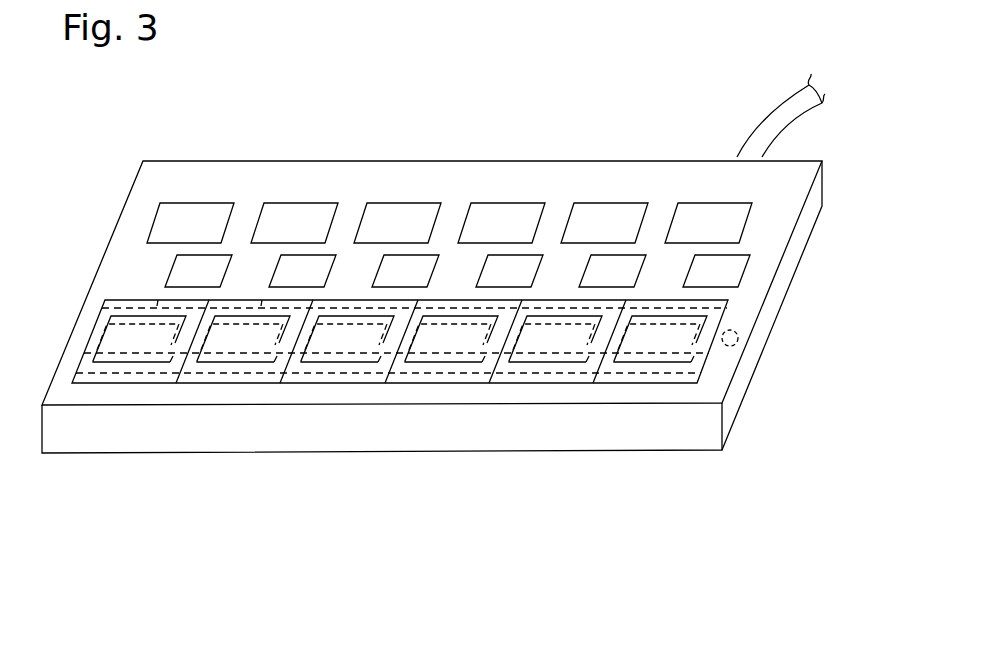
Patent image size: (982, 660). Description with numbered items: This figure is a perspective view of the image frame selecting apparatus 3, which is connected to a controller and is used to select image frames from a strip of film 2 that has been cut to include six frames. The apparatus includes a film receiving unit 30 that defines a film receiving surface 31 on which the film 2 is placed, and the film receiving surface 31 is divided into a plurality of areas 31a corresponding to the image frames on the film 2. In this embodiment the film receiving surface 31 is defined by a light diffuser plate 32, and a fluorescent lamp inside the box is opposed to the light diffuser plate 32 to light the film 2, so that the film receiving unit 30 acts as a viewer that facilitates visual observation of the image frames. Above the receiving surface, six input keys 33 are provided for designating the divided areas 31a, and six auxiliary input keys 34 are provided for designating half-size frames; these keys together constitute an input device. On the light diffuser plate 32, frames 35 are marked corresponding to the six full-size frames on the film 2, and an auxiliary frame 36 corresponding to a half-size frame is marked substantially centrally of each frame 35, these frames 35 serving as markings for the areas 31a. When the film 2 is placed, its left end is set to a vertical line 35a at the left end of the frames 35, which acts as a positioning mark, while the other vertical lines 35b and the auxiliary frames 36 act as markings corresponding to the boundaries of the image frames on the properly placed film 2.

The film 2 is at (452, 373).
The image frame selecting apparatus 3 is at (405, 459).
The film receiving unit 30 is at (812, 260).
The film receiving surface 31 is at (655, 342).
The areas 31a is at (110, 378).
The light diffuser plate 32 is at (622, 375).
The input keys 33 is at (395, 212).
The auxiliary input keys 34 is at (603, 257).
The frames 35 is at (182, 368).
The vertical line 35a is at (88, 345).
The vertical lines 35b is at (372, 372).
The auxiliary frame 36 is at (260, 304).